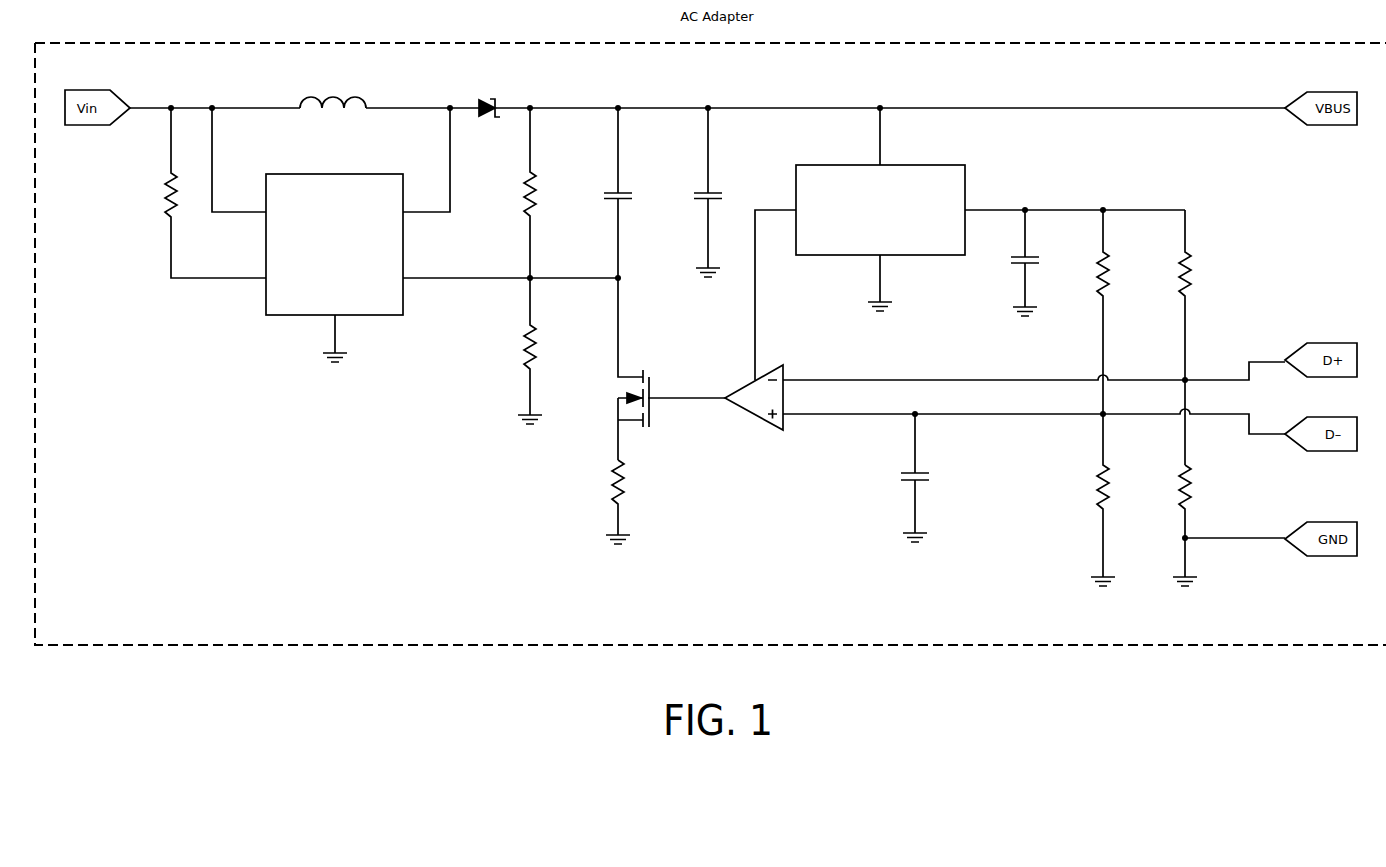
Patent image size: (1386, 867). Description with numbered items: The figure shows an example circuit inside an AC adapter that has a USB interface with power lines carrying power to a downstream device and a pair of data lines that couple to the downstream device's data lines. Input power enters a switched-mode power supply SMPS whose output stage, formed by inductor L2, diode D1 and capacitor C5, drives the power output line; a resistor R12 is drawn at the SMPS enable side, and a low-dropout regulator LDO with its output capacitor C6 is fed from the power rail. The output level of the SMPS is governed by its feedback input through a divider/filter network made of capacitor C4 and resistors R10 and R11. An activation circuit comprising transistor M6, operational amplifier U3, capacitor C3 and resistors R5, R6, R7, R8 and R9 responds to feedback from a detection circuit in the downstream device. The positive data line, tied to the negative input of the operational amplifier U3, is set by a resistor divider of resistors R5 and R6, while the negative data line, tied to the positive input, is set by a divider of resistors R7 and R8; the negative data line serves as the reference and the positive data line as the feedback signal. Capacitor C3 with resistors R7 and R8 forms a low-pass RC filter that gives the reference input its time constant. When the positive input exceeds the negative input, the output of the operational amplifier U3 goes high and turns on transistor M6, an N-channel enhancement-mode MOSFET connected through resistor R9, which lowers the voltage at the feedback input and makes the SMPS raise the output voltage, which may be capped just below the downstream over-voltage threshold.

The inductor L2 is at (333, 91).
The diode D1 is at (489, 97).
The resistor R12 is at (199, 193).
The switched-mode power supply SMPS is at (334, 230).
The resistor R10 is at (513, 193).
The resistor R11 is at (514, 351).
The capacitor C4 is at (607, 193).
The capacitor C5 is at (696, 192).
The low-dropout regulator circuitry LDO is at (880, 210).
The capacitor C6 is at (1037, 263).
The resistor R7 is at (1118, 312).
The resistor R5 is at (1200, 337).
The resistor R8 is at (1115, 500).
The resistor R6 is at (1229, 525).
The operational amplifier U3 is at (715, 400).
The transistor M6 is at (617, 369).
The resistor R9 is at (605, 502).
The capacitor C3 is at (927, 478).